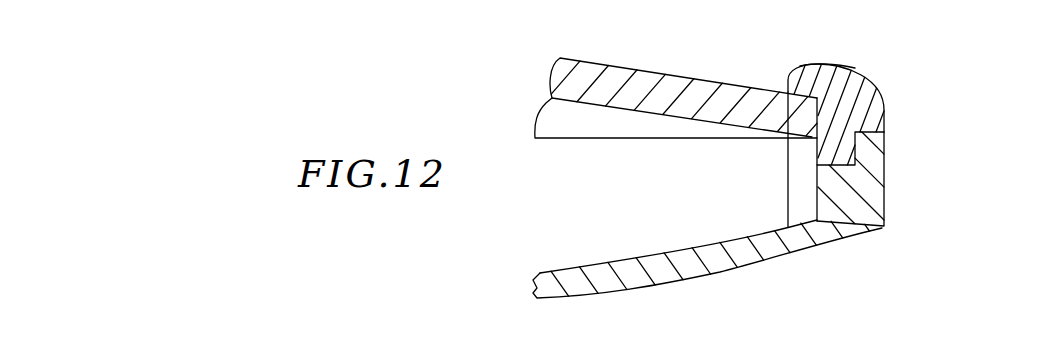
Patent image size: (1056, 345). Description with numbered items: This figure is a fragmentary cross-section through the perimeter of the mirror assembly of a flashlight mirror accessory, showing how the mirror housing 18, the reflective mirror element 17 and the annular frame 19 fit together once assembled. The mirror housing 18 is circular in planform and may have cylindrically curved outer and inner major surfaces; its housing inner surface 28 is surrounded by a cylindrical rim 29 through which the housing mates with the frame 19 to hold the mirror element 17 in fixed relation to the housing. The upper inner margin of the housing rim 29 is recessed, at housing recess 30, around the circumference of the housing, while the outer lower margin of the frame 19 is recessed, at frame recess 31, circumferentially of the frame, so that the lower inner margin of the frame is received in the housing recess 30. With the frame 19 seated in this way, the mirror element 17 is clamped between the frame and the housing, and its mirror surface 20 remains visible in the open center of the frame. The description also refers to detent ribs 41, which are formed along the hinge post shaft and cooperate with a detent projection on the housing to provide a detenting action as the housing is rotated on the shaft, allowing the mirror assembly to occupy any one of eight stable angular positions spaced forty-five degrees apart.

The mirror surface 20 is at (622, 65).
The reflective mirror element 17 is at (617, 107).
The detent ribs 41 is at (803, 185).
The annular frame 19 is at (870, 79).
The housing recess 30 is at (838, 150).
The frame recess 31 is at (860, 134).
The cylindrical rim 29 is at (855, 187).
The housing inner surface 28 is at (648, 262).
The mirror housing 18 is at (667, 283).